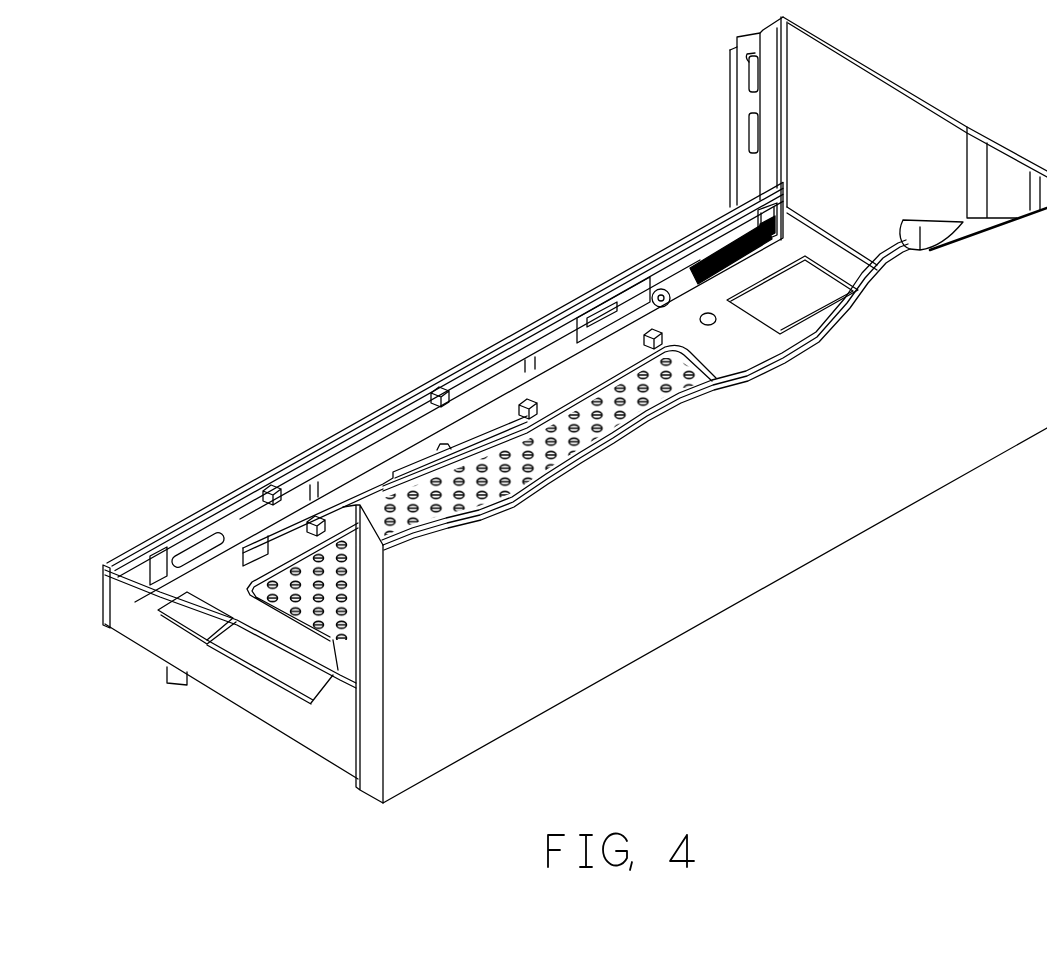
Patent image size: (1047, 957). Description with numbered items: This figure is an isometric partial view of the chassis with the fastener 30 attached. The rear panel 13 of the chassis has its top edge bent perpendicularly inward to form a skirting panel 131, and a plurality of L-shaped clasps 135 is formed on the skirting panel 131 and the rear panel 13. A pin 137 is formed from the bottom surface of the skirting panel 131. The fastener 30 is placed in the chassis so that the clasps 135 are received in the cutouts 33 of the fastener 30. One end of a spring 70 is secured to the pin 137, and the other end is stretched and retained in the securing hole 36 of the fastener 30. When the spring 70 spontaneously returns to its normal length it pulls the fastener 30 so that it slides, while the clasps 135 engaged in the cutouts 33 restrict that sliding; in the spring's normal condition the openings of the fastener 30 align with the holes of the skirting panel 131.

The rear panel 13 is at (247, 612).
The skirting panel 131 is at (330, 440).
The L-shaped clasps 135 is at (276, 488).
The pin 137 is at (765, 226).
The fastener 30 is at (415, 445).
The cutouts 33 is at (248, 487).
The securing hole 36 is at (607, 286).
The spring 70 is at (700, 266).